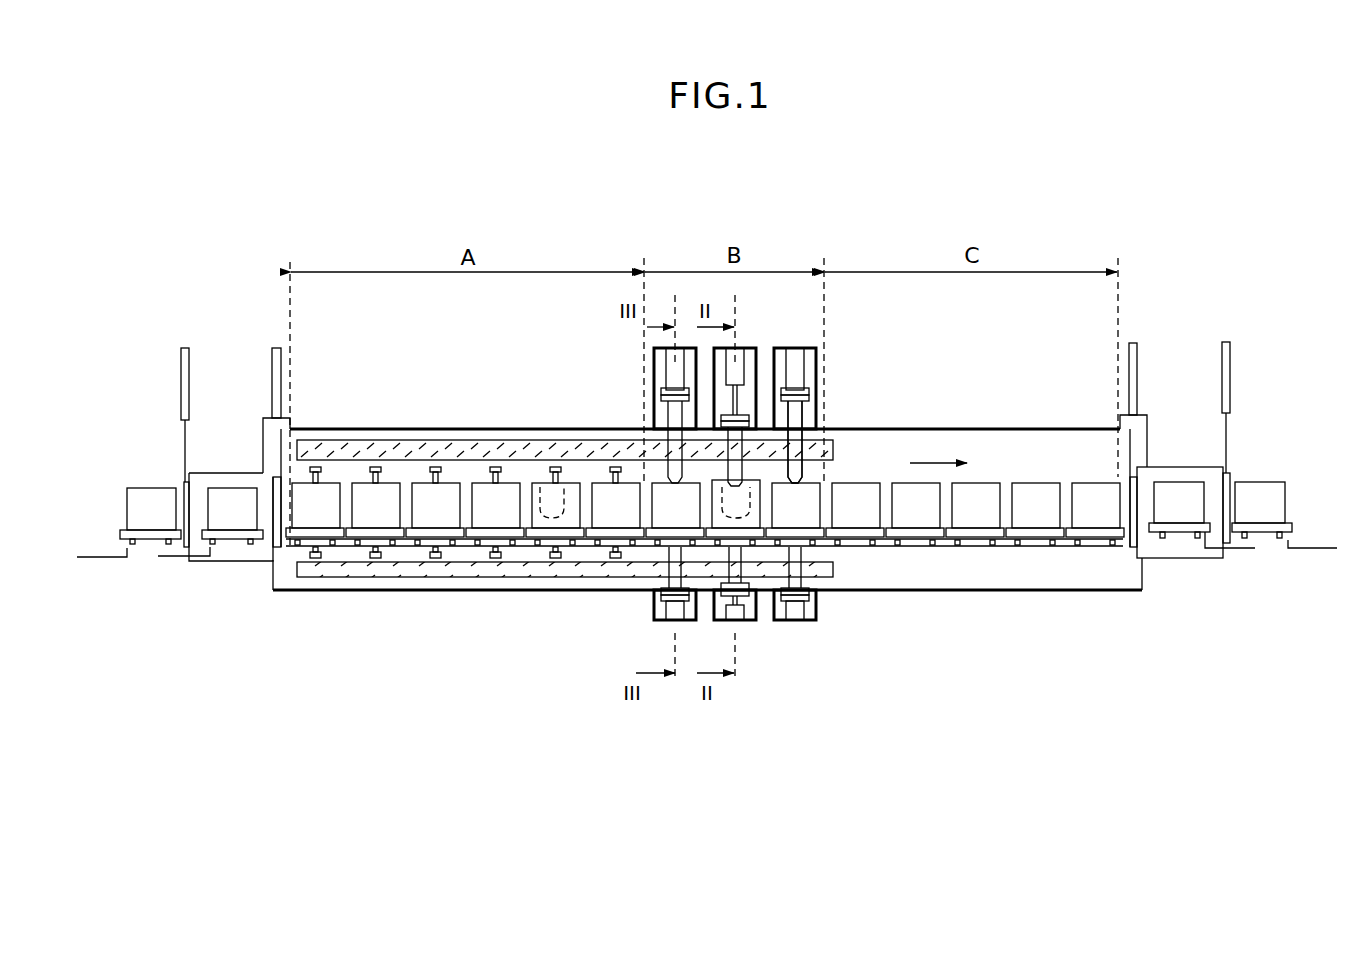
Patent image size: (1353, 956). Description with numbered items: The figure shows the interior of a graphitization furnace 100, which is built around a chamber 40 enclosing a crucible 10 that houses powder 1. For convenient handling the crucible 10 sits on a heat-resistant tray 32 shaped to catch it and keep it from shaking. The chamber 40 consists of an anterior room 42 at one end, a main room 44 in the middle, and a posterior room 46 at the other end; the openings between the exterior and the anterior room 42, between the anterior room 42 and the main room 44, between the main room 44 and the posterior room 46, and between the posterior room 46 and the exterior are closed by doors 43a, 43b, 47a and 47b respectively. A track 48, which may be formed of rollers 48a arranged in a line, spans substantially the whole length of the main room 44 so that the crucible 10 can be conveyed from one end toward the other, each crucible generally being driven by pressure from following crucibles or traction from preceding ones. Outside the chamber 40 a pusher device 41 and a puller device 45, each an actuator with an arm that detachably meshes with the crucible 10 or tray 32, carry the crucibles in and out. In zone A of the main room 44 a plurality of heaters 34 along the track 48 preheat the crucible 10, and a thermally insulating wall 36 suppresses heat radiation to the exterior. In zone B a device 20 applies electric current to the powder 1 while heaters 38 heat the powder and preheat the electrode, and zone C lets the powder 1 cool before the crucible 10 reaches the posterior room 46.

The graphitization furnace 100 is at (1142, 258).
The chamber 40 is at (243, 328).
The pusher device 41 is at (93, 558).
The anterior room 42 is at (225, 473).
The door 43a is at (183, 493).
The door 43b is at (272, 540).
The main room 44 is at (348, 440).
The thermally insulating wall 36 is at (618, 445).
The heaters 34 is at (442, 463).
The crucible 10 is at (524, 482).
The powder 1 is at (556, 486).
The tray 32 is at (543, 550).
The rollers 48a is at (418, 555).
The track 48 is at (408, 562).
The device for applying electric current 20 is at (748, 345).
The heaters 38 is at (801, 481).
The posterior room 46 is at (1180, 467).
The door 47a is at (1135, 530).
The door 47b is at (1232, 480).
The puller device 45 is at (1238, 548).